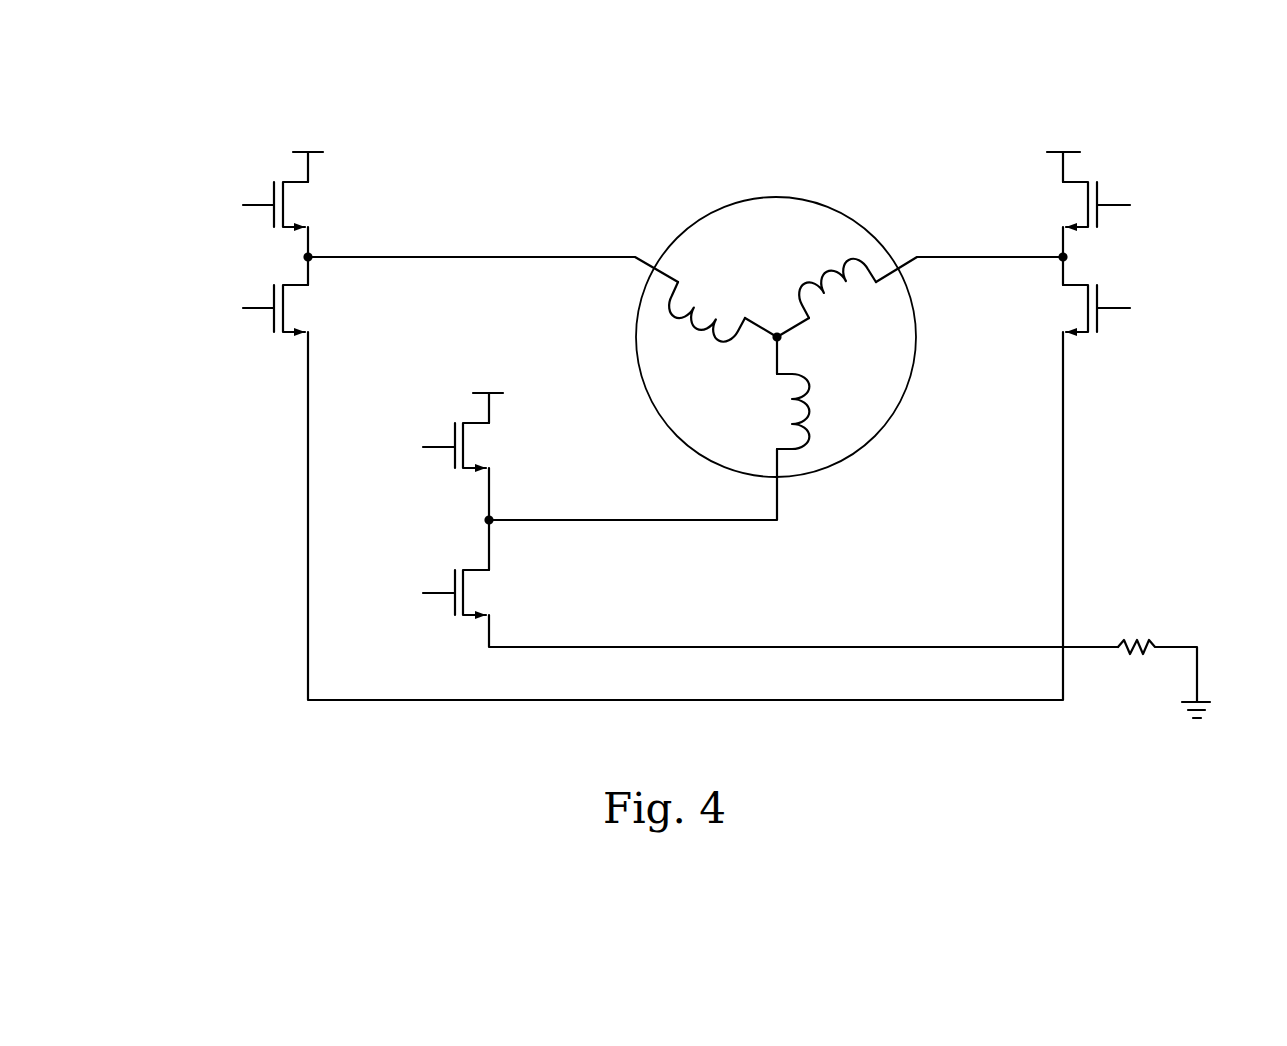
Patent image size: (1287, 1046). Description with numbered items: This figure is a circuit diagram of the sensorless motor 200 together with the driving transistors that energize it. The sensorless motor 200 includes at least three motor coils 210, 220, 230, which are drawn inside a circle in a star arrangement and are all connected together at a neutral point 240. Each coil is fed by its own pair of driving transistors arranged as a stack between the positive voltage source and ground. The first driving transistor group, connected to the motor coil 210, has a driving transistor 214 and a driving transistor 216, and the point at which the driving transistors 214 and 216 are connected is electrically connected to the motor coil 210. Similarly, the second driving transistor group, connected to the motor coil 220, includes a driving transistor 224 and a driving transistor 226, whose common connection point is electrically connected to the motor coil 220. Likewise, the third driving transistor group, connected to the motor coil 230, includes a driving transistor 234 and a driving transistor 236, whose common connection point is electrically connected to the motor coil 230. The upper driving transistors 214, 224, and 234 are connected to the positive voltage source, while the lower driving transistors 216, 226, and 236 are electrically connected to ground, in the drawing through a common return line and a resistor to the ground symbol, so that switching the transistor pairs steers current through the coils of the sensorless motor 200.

The sensorless motor 200 is at (202, 96).
The motor coil 210 is at (717, 360).
The motor coil 220 is at (848, 422).
The motor coil 230 is at (840, 263).
The neutral point 240 is at (832, 360).
The driving transistor 214 is at (272, 188).
The driving transistor 216 is at (272, 292).
The driving transistor 224 is at (452, 430).
The driving transistor 226 is at (452, 578).
The driving transistor 234 is at (1100, 188).
The driving transistor 236 is at (1100, 292).